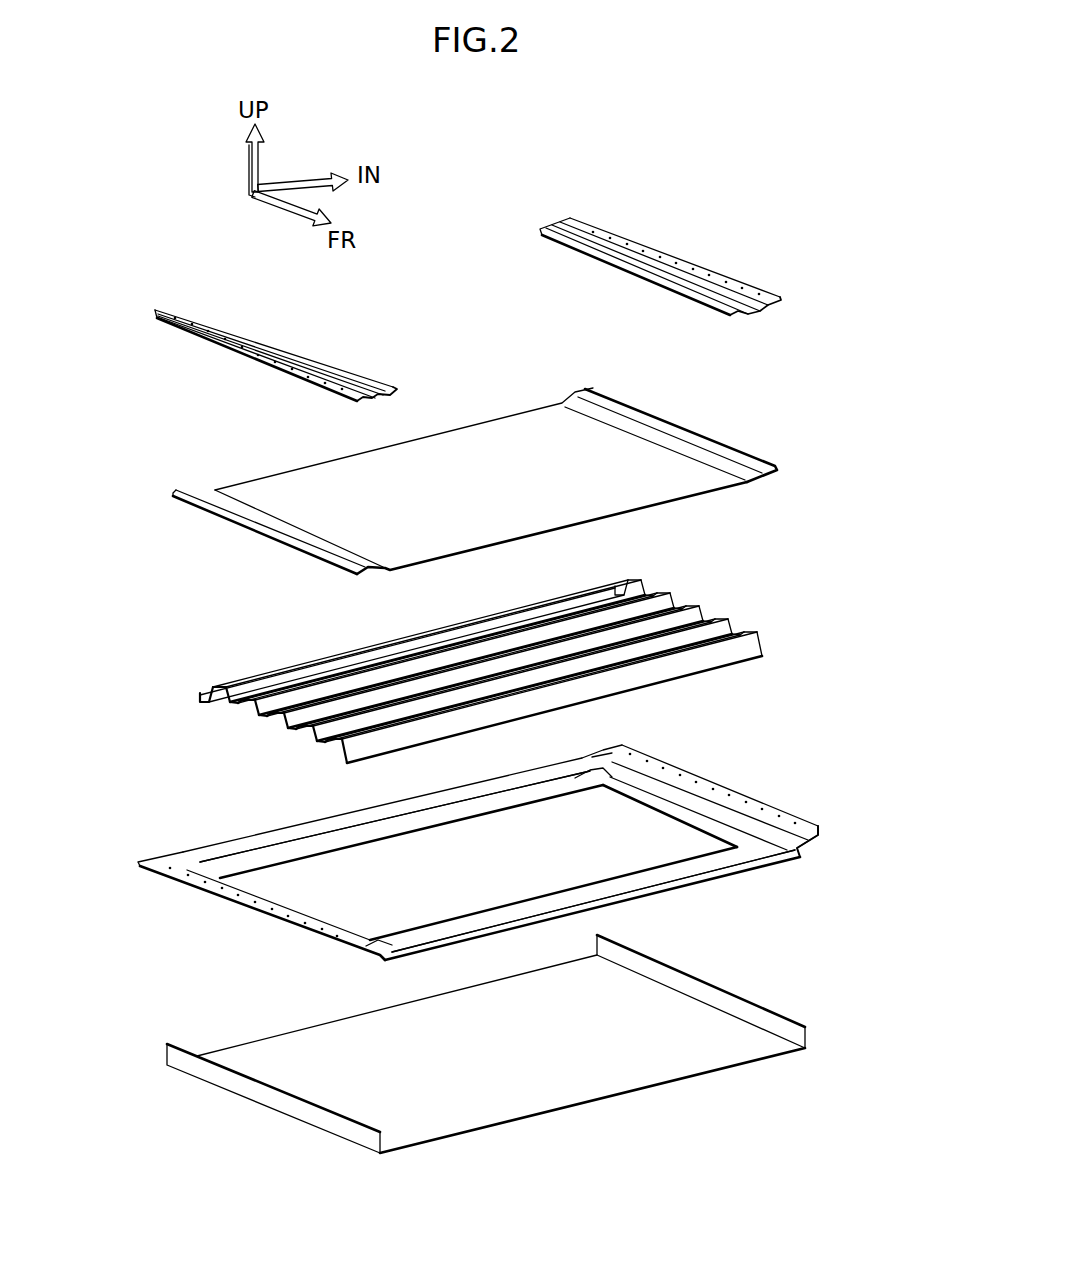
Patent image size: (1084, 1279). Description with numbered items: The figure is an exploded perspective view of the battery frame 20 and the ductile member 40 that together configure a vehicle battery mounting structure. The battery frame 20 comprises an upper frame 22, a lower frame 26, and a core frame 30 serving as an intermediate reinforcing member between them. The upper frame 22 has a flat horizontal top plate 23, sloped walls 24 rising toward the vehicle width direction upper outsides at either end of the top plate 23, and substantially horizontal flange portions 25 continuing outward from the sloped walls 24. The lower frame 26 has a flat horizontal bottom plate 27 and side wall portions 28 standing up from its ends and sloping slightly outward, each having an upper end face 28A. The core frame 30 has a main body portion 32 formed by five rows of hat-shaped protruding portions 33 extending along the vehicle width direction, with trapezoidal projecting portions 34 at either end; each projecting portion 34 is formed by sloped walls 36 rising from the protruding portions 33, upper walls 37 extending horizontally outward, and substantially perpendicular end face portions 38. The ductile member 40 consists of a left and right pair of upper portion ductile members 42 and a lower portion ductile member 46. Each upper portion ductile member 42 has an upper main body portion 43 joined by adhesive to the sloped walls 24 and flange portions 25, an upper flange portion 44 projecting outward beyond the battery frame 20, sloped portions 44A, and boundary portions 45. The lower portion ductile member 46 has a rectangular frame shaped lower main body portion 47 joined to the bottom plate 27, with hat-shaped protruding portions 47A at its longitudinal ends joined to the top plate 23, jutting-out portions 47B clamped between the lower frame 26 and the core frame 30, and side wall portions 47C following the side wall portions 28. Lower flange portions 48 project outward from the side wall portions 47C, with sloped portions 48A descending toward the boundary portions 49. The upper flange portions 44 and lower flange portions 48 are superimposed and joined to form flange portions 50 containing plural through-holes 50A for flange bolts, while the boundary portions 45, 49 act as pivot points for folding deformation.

The battery frame 20 is at (646, 364).
The upper frame 22 is at (477, 418).
The top plate 23 is at (323, 470).
The sloped walls 24 is at (660, 437).
The flange portions 25 is at (722, 440).
The lower frame 26 is at (622, 1102).
The bottom plate 27 is at (495, 1090).
The side wall portions 28 is at (697, 990).
The upper end face 28A is at (756, 1003).
The core frame 30 is at (450, 621).
The main body portion 32 is at (595, 712).
The protruding portions 33 is at (518, 617).
The projecting portions 34 is at (702, 604).
The sloped walls 36 is at (612, 596).
The upper walls 37 is at (740, 632).
The end face portions 38 is at (762, 643).
The ductile member 40 is at (485, 576).
The upper portion ductile members 42 is at (247, 366).
The upper main body portions 43 is at (302, 348).
The upper flange portion 44 is at (222, 342).
The sloped portions 44A is at (207, 312).
The boundary portions 45 is at (265, 343).
The lower portion ductile member 46 is at (736, 780).
The lower main body portion 47 is at (243, 838).
The protruding portion 47A is at (428, 806).
The jutting-out portions 47B is at (640, 800).
The side wall portions 47C is at (723, 820).
The lower flange portions 48 is at (660, 748).
The sloped portions 48A is at (780, 812).
The boundary portion 49 is at (612, 753).
The flange portions 50 is at (483, 539).
The through-holes 50A is at (608, 228).